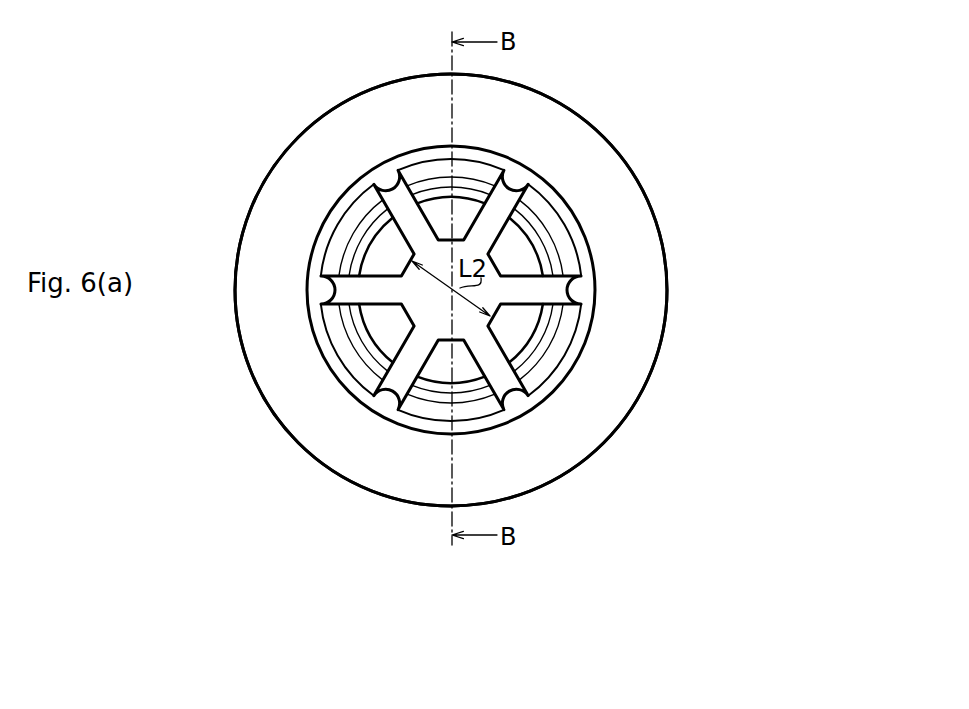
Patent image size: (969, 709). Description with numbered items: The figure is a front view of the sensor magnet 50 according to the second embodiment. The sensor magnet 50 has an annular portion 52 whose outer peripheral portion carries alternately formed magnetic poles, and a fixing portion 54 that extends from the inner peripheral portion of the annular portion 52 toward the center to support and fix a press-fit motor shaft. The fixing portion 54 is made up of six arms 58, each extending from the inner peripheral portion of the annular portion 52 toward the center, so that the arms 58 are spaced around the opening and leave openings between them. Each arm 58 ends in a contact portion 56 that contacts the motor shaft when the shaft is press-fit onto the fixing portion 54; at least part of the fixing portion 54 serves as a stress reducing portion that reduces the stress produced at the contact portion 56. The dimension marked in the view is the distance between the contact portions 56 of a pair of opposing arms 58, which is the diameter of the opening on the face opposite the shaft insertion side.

The sensor magnet 50 is at (467, 628).
The annular portion 52 is at (551, 117).
The fixing portion 54 is at (516, 246).
The contact portion 56 is at (412, 260).
The arm 58 is at (478, 161).